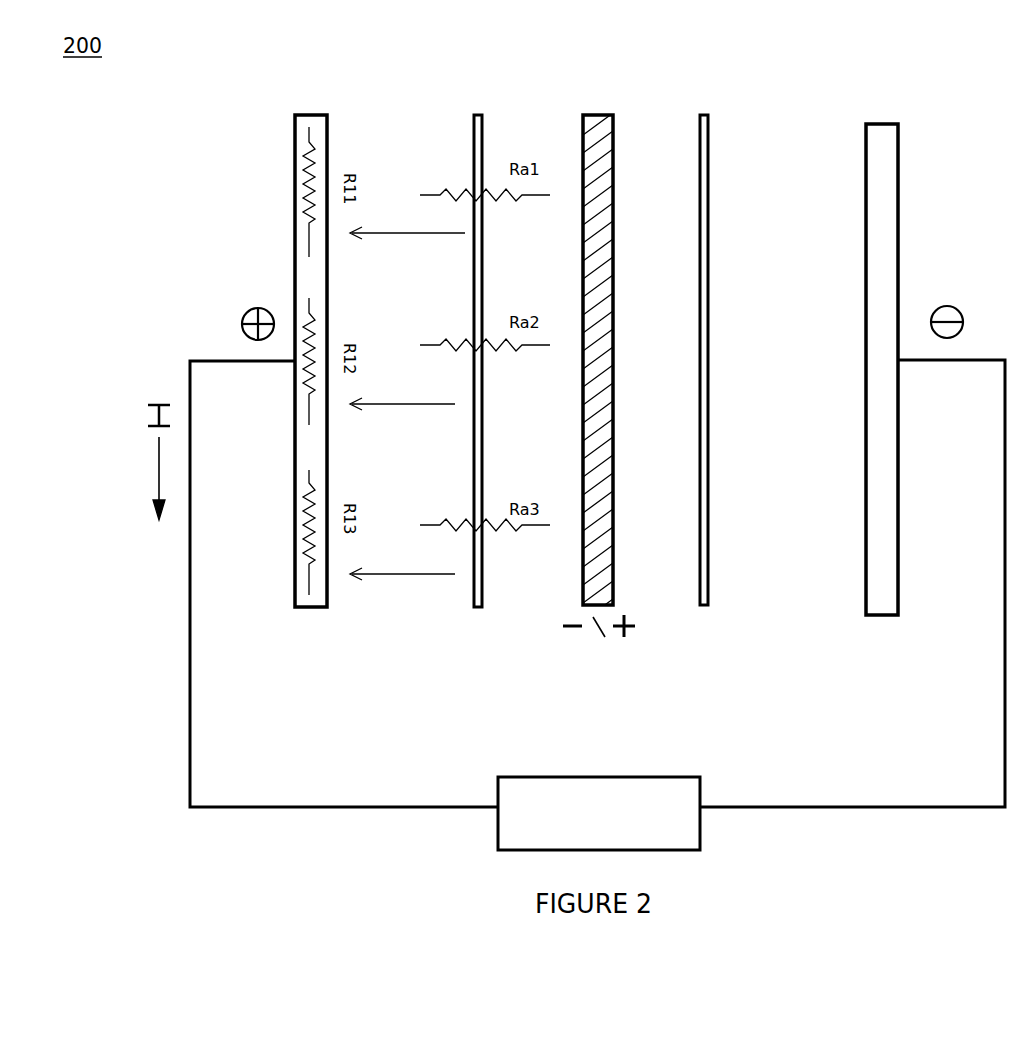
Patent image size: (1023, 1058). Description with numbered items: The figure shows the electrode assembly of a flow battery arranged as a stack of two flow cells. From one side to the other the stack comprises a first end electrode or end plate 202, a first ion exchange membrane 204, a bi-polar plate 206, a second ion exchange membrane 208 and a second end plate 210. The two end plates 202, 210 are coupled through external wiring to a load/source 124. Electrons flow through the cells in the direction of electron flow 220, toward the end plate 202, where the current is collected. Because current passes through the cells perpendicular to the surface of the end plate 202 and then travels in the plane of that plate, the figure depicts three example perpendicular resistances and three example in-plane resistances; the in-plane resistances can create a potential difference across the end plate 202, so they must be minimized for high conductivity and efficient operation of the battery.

The end electrode (end plate) 202 is at (308, 115).
The IEM (ion exchange membrane) 204 is at (480, 115).
The bi-polar plate 206 is at (602, 115).
The IEM (ion exchange membrane) 208 is at (707, 115).
The end electrode (end plate) 210 is at (880, 124).
The direction of electron flow 220 is at (395, 578).
The load/source 124 is at (703, 787).